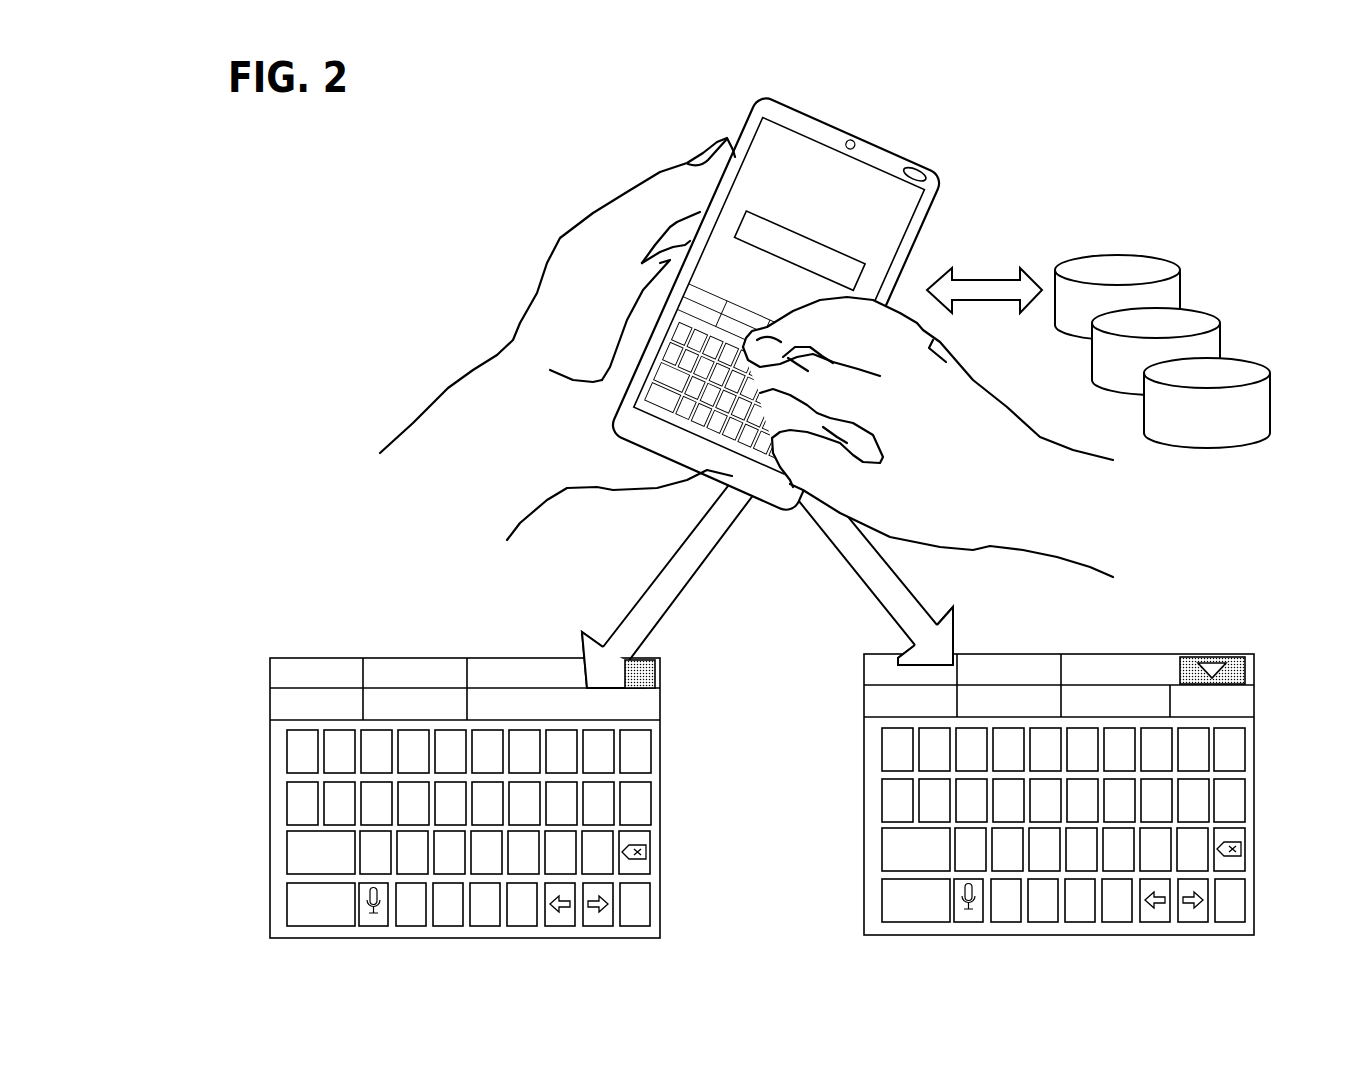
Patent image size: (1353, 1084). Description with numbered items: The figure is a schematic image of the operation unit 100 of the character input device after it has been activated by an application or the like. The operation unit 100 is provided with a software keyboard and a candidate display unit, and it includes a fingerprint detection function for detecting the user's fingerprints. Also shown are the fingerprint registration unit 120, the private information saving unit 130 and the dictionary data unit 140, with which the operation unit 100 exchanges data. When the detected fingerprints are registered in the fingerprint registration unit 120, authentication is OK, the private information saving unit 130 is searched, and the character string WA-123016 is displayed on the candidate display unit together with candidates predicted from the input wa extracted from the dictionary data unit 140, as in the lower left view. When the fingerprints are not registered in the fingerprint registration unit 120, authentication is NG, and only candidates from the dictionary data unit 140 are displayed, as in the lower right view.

The operation unit 100 is at (602, 310).
The fingerprint registration unit 120 is at (1147, 267).
The private information saving unit 130 is at (1187, 318).
The dictionary data unit 140 is at (1238, 370).